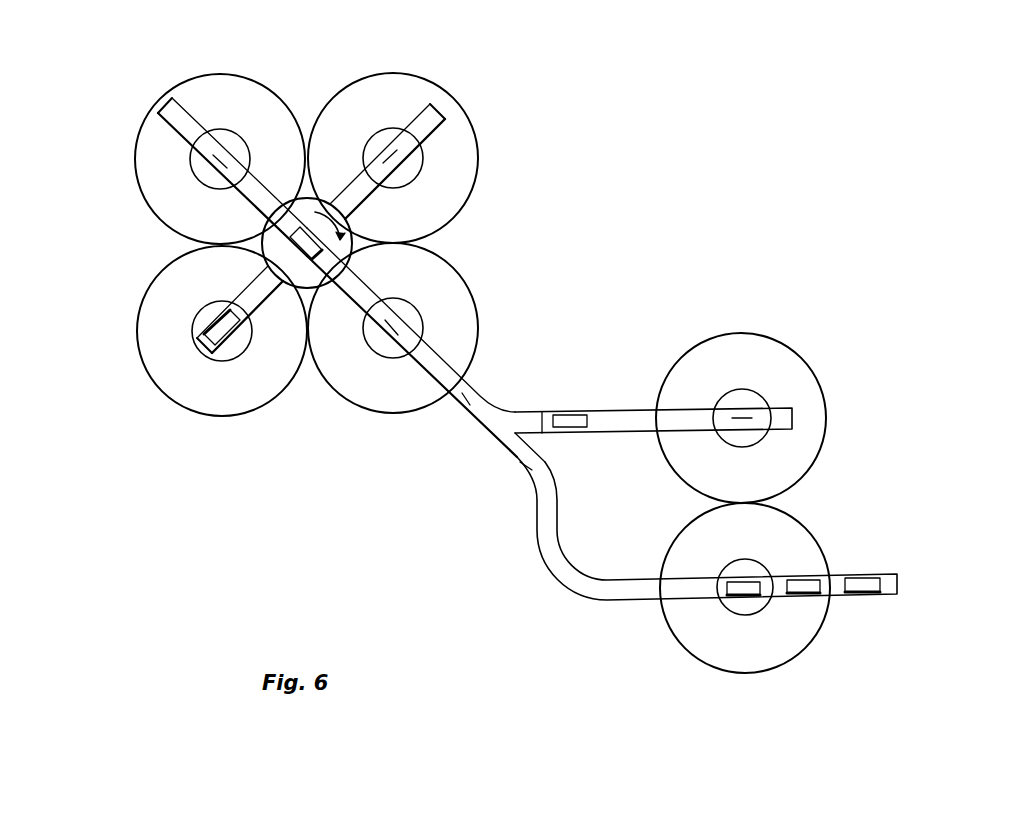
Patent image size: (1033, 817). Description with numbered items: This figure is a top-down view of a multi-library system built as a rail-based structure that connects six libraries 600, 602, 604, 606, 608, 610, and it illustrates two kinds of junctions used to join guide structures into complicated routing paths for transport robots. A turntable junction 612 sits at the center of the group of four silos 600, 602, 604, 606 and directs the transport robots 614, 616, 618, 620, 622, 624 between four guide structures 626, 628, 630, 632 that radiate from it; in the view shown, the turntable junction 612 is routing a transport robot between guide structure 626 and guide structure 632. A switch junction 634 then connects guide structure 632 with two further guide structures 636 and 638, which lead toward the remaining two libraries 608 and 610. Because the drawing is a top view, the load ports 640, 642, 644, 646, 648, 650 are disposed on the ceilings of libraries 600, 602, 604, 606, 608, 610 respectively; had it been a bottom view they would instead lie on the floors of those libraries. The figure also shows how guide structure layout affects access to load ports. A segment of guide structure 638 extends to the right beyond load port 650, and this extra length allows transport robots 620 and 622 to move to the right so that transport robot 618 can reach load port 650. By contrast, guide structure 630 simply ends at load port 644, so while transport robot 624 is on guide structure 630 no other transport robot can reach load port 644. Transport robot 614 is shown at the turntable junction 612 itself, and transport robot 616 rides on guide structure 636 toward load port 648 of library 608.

The library 600 is at (218, 88).
The library 602 is at (392, 82).
The library 604 is at (215, 415).
The library 606 is at (395, 400).
The library 608 is at (730, 353).
The library 610 is at (745, 657).
The turntable junction 612 is at (270, 233).
The transport robot 614 is at (297, 252).
The transport robot 616 is at (568, 414).
The transport robot 618 is at (737, 580).
The transport robot 620 is at (802, 580).
The transport robot 622 is at (852, 597).
The transport robot 624 is at (208, 325).
The guide structure 626 is at (165, 104).
The guide structure 628 is at (435, 113).
The guide structure 630 is at (207, 353).
The guide structure 632 is at (482, 398).
The switch junction 634 is at (498, 430).
The guide structure 636 is at (630, 423).
The guide structure 638 is at (545, 520).
The load port 640 is at (237, 138).
The load port 642 is at (410, 167).
The load port 644 is at (235, 348).
The load port 646 is at (372, 350).
The load port 648 is at (742, 395).
The load port 650 is at (745, 612).